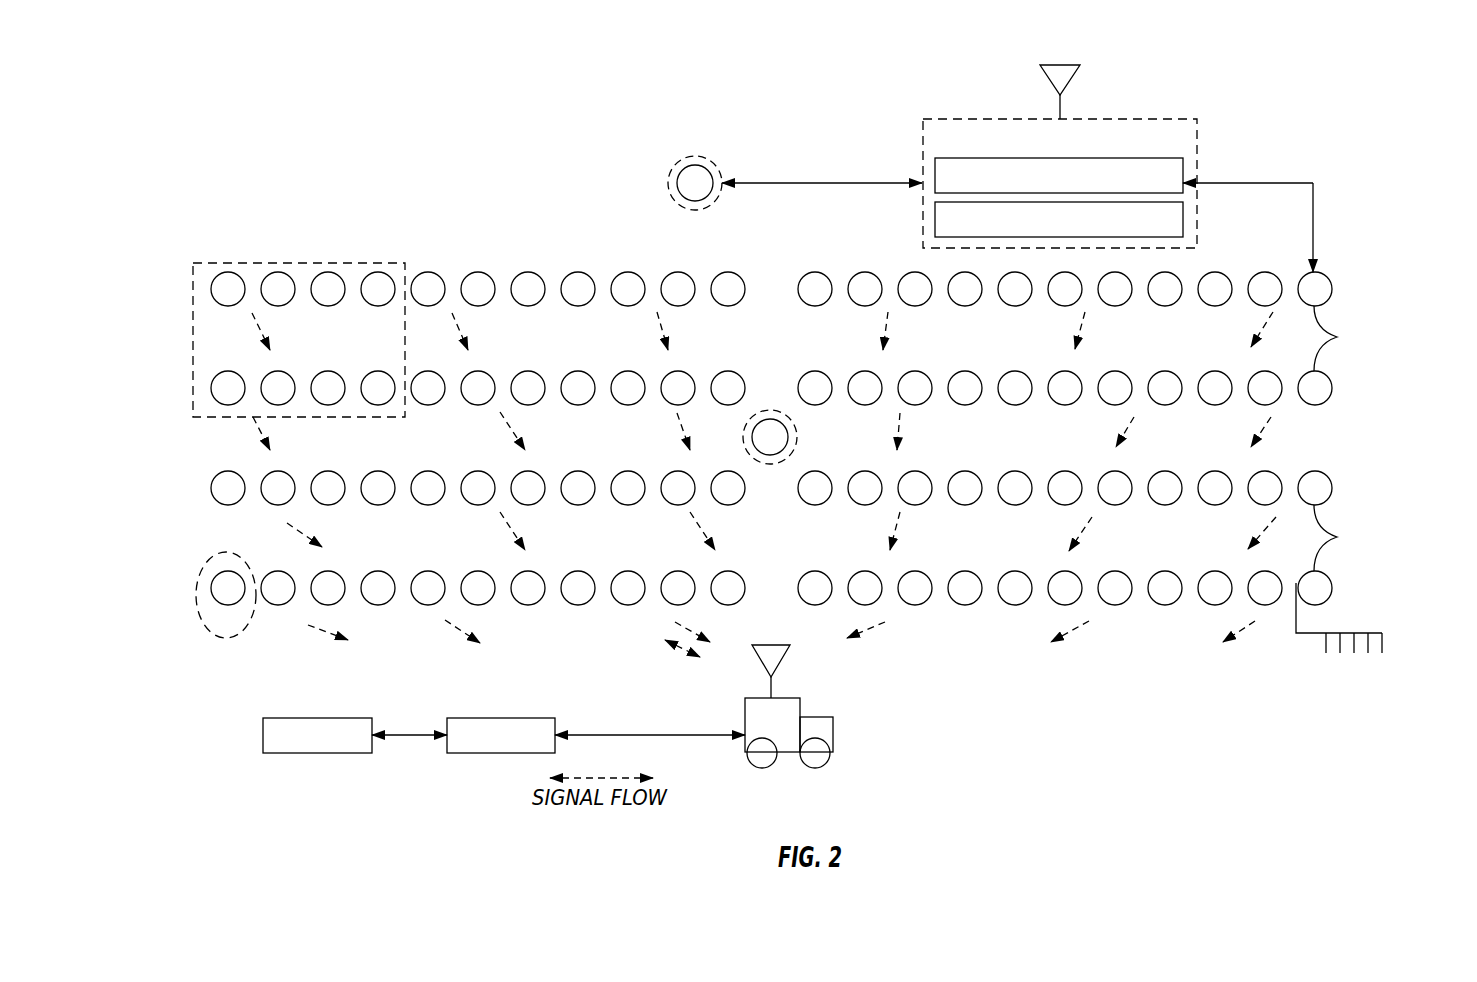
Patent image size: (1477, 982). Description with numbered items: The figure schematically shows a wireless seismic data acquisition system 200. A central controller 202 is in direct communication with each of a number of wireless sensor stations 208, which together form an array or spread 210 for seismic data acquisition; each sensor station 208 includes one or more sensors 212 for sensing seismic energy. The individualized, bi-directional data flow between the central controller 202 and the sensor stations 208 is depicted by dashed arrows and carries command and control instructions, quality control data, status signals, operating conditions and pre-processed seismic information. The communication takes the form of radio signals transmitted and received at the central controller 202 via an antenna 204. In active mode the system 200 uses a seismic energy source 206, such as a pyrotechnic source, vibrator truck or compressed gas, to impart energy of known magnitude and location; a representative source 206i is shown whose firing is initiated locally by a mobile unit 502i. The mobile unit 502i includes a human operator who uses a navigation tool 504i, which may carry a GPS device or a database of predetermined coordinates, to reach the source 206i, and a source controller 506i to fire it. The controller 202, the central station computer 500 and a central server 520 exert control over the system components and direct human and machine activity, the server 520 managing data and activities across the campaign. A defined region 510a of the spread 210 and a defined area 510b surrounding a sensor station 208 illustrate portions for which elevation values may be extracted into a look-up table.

The wireless seismic data acquisition system 200 is at (1042, 662).
The central controller 202 is at (833, 732).
The antenna 204 is at (1070, 85).
The seismic energy source 206 is at (798, 432).
The representative seismic energy source 206i is at (695, 158).
The wireless sensor station 208 is at (1337, 337).
The array (spread) 210 is at (395, 208).
The sensor 212 is at (1382, 647).
The central station computer (CSC) 500 is at (477, 718).
The mobile unit 502i is at (1198, 143).
The navigation tool 504i is at (933, 163).
The source controller 506i is at (933, 218).
The defined region 510a is at (252, 262).
The defined area 510b is at (228, 553).
The central server 520 is at (288, 718).